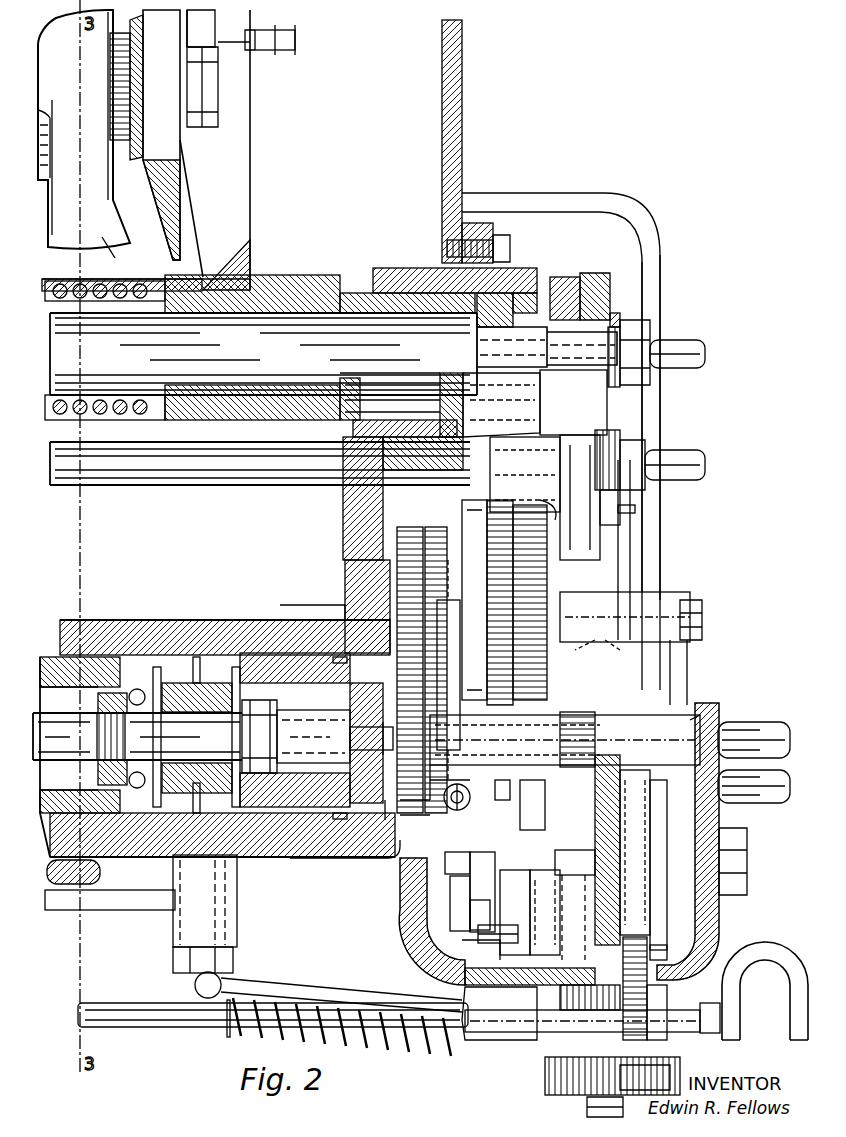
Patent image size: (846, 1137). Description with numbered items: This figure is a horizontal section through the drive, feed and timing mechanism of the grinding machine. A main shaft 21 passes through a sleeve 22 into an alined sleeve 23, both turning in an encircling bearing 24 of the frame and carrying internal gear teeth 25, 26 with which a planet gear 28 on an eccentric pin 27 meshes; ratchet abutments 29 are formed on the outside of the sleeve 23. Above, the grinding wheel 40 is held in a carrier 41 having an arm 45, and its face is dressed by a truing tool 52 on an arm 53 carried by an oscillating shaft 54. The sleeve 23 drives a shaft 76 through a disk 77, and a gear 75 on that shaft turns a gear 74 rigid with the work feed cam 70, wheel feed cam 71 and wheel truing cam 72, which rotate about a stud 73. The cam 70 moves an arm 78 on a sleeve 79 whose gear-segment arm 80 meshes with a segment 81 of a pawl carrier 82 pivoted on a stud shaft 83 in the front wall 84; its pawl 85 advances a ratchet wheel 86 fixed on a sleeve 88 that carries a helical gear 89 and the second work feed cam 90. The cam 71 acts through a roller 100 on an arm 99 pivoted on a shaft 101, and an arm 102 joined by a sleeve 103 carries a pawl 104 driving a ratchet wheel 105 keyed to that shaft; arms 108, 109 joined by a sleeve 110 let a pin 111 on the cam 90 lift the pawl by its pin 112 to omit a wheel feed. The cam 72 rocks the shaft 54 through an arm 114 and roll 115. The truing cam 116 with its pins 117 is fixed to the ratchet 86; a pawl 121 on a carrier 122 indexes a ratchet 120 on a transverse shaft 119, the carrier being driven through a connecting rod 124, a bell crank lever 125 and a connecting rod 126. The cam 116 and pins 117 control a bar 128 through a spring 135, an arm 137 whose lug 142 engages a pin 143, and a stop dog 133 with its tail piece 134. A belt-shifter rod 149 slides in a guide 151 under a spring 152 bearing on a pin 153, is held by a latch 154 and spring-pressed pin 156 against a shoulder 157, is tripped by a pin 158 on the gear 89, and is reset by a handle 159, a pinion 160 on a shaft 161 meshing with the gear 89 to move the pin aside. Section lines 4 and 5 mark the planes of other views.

The shaft 21 is at (40, 740).
The sleeve 22 is at (70, 660).
The alined sleeve 23 is at (275, 650).
The encircling bearing 24 is at (125, 625).
The internal gear teeth 25 is at (175, 660).
The internal gear teeth 26 is at (238, 660).
The eccentric pin 27 is at (262, 740).
The planet gear 28 is at (205, 655).
The ratchet teeth 29 is at (335, 655).
The grinding wheel 40 is at (170, 198).
The carrier 41 is at (55, 50).
The arm 45 is at (116, 253).
The truing tool 52 is at (203, 8).
The arm 53 is at (248, 196).
The shaft 54 is at (290, 335).
The work feed cam 70 is at (410, 545).
The wheel feed cam 71 is at (495, 660).
The wheel truing cam 72 is at (520, 690).
The stud 73 is at (698, 605).
The gear 74 is at (385, 545).
The gear 75 is at (412, 805).
The shaft 76 is at (745, 730).
The disk 77 is at (335, 840).
The arm 78 is at (448, 630).
The sleeve 79 is at (448, 768).
The second arm 80 is at (565, 770).
The complemental segment 81 is at (560, 790).
The pawl carrier 82 is at (548, 930).
The stud shaft 83 is at (575, 925).
The front wall 84 is at (716, 930).
The pawl 85 is at (595, 848).
The ratchet wheel 86 is at (538, 810).
The sleeve 88 is at (625, 948).
The helical gear 89 is at (612, 868).
The second work feed cam 90 is at (668, 945).
The arm 99 is at (436, 548).
The roller 100 is at (560, 585).
The shaft 101 is at (650, 448).
The arm 102 is at (628, 455).
The sleeve 103 is at (545, 505).
The pawl 104 is at (625, 492).
The ratchet wheel 105 is at (605, 445).
The arm 108 is at (680, 660).
The arm 109 is at (632, 552).
The sleeve 110 is at (606, 640).
The pin 111 is at (720, 712).
The pin 112 is at (638, 510).
The arm 114 is at (570, 540).
The roll 115 is at (559, 510).
The truing cam 116 is at (520, 930).
The pins 117 is at (478, 932).
The transverse shaft 119 is at (600, 1117).
The ratchet wheel 120 is at (545, 1082).
The pawl 121 is at (652, 1090).
The pawl carrier 122 is at (575, 1050).
The connecting rod 124 is at (100, 872).
The bell crank lever 125 is at (165, 900).
The connecting rod 126 is at (320, 985).
The bar 128 is at (483, 860).
The stop dog 133 is at (465, 900).
The tail piece 134 is at (470, 885).
The spring 135 is at (455, 789).
The arm 137 is at (500, 775).
The lug 142 is at (447, 858).
The pin 143 is at (455, 870).
The horizontal rod 149 is at (160, 1022).
The guide 151 is at (485, 1040).
The spring 152 is at (385, 1036).
The pin 153 is at (227, 1032).
The latch 154 is at (660, 990).
The spring-pressed pin 156 is at (640, 992).
The shoulder 157 is at (705, 1032).
The pin 158 is at (655, 962).
The handle 159 is at (762, 958).
The pinion 160 is at (612, 758).
The shaft 161 is at (745, 800).
The section line 4 is at (670, 1042).
The section line 5 is at (555, 1047).